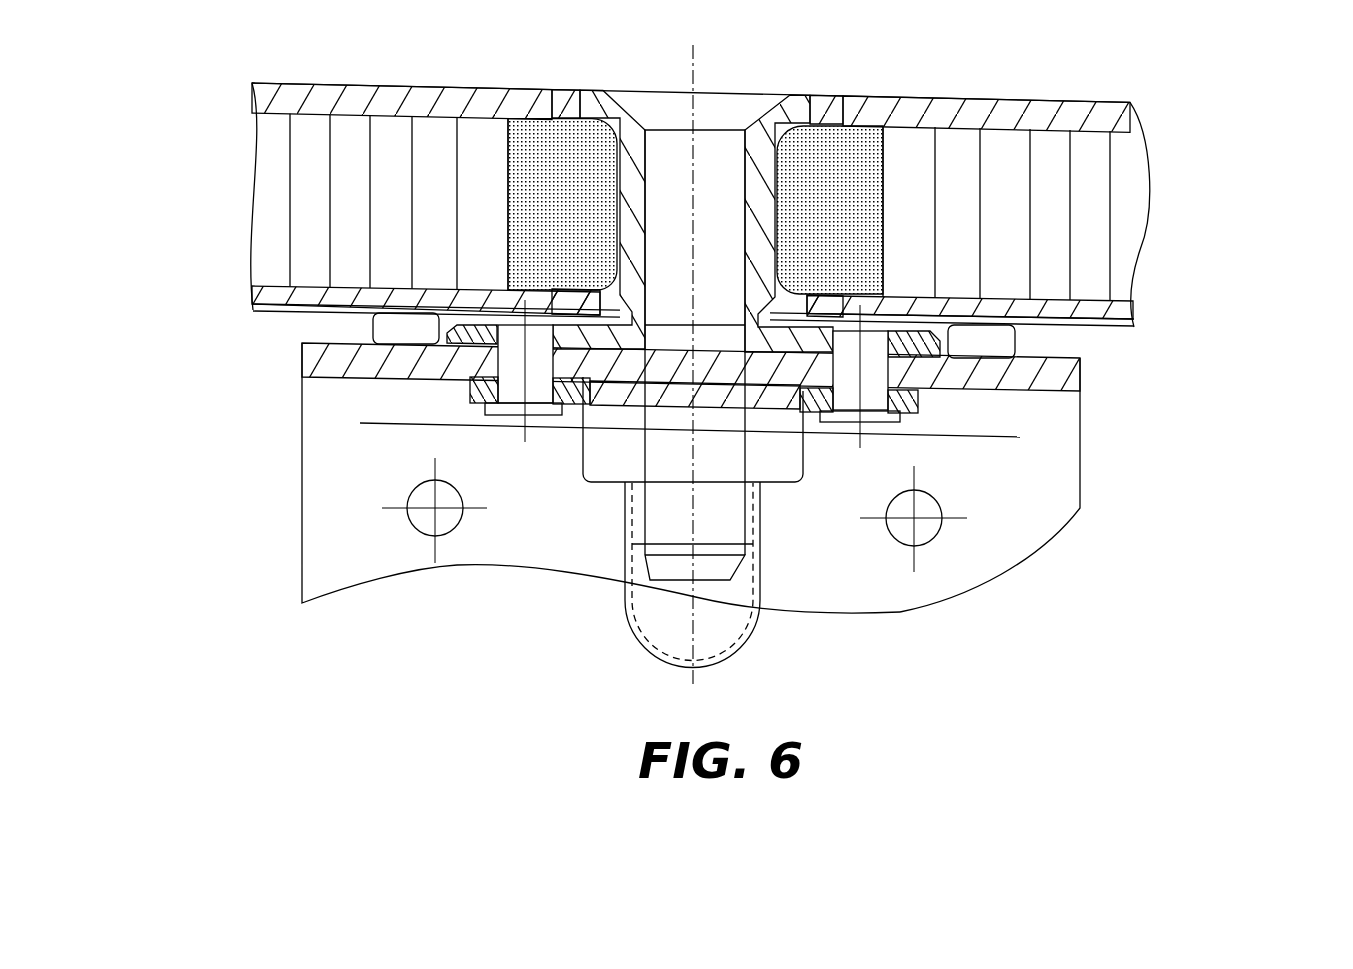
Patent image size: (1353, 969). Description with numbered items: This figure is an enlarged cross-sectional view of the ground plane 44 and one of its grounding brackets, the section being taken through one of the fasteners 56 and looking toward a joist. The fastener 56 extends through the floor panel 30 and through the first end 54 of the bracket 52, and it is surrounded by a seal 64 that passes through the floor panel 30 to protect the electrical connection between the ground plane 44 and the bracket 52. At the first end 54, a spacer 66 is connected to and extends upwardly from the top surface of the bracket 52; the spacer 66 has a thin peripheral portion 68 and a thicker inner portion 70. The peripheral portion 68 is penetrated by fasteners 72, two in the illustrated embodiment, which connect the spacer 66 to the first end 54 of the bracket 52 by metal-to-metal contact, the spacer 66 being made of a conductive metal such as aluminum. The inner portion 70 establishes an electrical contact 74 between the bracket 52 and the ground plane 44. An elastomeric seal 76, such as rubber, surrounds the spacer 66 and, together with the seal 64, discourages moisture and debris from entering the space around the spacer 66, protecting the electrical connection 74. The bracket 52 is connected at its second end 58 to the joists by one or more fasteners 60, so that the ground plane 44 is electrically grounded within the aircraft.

The floor panel 30 is at (1117, 207).
The ground plane 44 is at (1134, 325).
The bracket 52 is at (572, 528).
The first end 54 is at (918, 403).
The fastener 56 is at (722, 177).
The second end 58 is at (1013, 518).
The fastener 60 is at (413, 533).
The seal 64 is at (783, 127).
The spacer 66 is at (470, 332).
The peripheral portion 68 is at (930, 342).
The inner portion 70 is at (805, 333).
The fastener 72 is at (500, 357).
The electrical contact 74 is at (628, 312).
The seal 76 is at (373, 330).